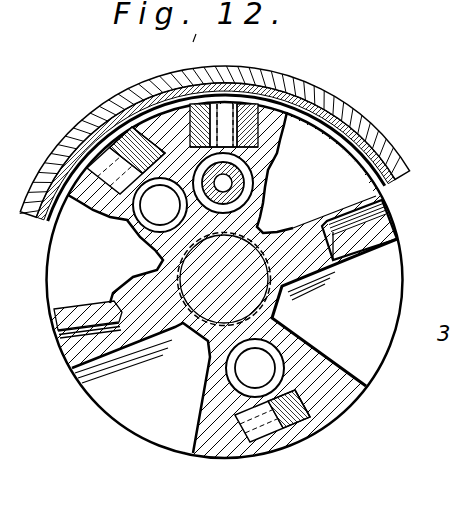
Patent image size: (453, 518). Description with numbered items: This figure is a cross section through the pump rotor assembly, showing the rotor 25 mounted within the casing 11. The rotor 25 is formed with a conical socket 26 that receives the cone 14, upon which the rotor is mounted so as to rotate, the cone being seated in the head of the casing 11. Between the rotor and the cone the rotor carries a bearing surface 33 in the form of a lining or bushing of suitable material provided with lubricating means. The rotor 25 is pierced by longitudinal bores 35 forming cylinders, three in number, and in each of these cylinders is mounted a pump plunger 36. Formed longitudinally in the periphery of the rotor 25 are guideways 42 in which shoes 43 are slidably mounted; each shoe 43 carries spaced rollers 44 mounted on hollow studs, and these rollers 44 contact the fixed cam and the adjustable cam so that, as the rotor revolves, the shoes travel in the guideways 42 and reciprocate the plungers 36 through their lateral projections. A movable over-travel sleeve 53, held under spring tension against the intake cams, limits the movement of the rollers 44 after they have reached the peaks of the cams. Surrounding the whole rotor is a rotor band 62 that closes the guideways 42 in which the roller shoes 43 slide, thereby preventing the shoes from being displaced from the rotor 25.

The casing 11 is at (133, 88).
The cone 14 is at (196, 340).
The rotor 25 is at (262, 205).
The conical socket 26 is at (268, 272).
The bearing surface 33 is at (295, 289).
The longitudinal bores 35 is at (152, 218).
The pump plungers 36 is at (141, 224).
The guideways 42 is at (290, 118).
The shoes 43 is at (140, 135).
The rollers 44 is at (122, 132).
The movable over-travel sleeve 53 is at (350, 147).
The rotor band 62 is at (363, 165).